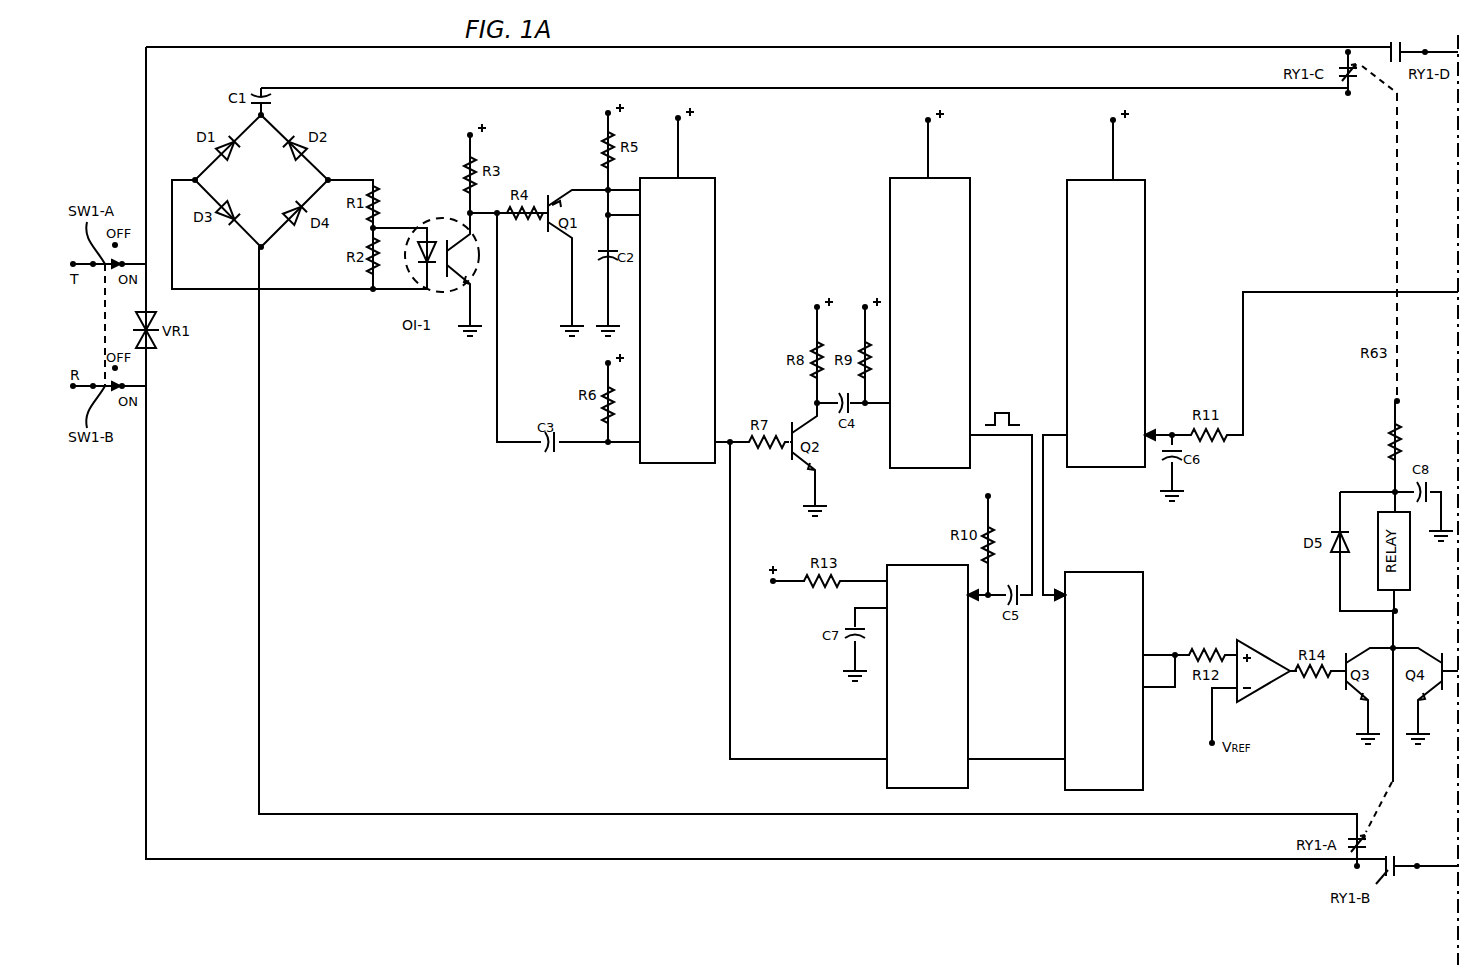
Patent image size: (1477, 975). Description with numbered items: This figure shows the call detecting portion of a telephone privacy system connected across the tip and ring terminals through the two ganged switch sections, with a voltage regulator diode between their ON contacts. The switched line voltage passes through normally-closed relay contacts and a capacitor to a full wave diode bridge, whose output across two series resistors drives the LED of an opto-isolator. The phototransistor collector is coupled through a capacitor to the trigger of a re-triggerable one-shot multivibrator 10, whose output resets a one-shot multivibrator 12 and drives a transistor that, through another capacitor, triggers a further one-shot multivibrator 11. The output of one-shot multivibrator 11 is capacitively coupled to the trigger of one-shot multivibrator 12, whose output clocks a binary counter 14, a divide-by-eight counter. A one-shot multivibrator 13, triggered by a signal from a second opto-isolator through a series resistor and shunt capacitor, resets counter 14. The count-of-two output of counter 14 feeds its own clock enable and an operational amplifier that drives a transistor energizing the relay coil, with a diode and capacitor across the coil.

The re-triggerable one-shot multivibrator 10 is at (717, 238).
The one-shot multivibrator 11 is at (972, 236).
The one-shot multivibrator 12 is at (968, 654).
The one-shot multivibrator 13 is at (1147, 228).
The binary counter 14 is at (1127, 572).